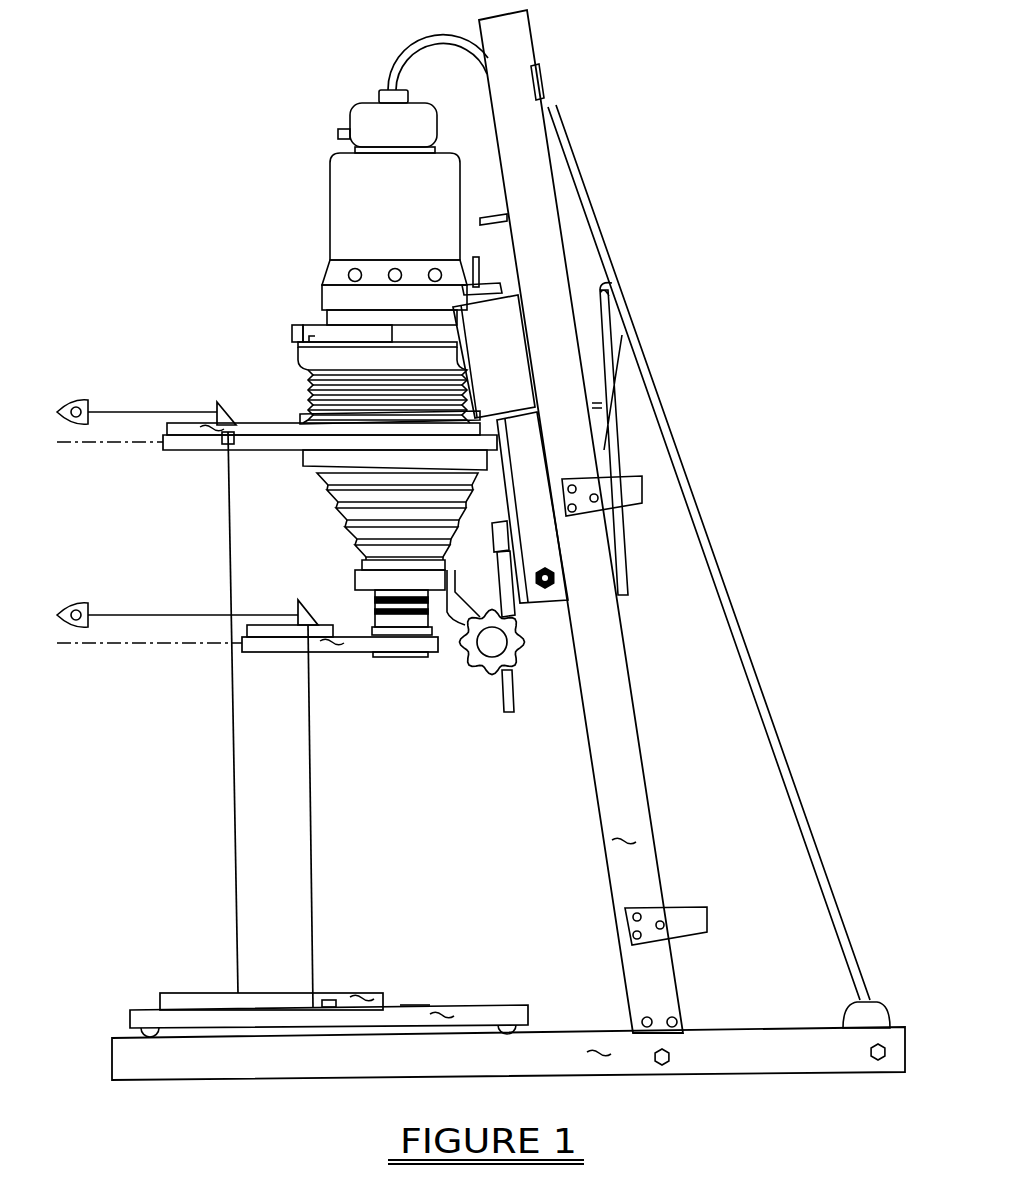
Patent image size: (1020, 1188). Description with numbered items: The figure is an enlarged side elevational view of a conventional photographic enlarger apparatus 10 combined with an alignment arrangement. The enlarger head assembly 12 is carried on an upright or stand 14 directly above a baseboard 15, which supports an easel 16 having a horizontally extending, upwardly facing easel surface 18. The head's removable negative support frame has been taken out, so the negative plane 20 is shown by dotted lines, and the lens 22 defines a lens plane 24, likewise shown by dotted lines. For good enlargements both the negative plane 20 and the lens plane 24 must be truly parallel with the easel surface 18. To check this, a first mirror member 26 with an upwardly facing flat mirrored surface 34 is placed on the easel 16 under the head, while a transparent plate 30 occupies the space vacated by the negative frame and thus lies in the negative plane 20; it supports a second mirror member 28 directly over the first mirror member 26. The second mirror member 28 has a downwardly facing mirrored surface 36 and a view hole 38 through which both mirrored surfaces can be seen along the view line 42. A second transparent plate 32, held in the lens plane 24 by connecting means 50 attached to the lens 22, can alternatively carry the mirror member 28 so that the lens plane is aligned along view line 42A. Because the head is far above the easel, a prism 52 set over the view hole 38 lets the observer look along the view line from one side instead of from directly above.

The photographic enlarger apparatus 10 is at (706, 342).
The enlarger head assembly 12 is at (262, 242).
The upright or stand 14 is at (630, 847).
The baseboard 15 is at (597, 1050).
The easel 16 is at (442, 1007).
The easel surface 18 is at (410, 1005).
The negative plane 20 is at (110, 443).
The lens 22 is at (373, 612).
The lens plane 24 is at (208, 645).
The first mirror member 26 is at (360, 995).
The second mirror member 28 is at (272, 428).
The plate 30 is at (217, 445).
The plate 32 is at (330, 648).
The mirrored surface 34 is at (332, 1007).
The mirrored surface 36 is at (210, 440).
The view hole 38 is at (240, 432).
The view line 42 is at (232, 700).
The view line 42A is at (313, 917).
The connecting means 50 is at (432, 657).
The prism 52 is at (226, 407).